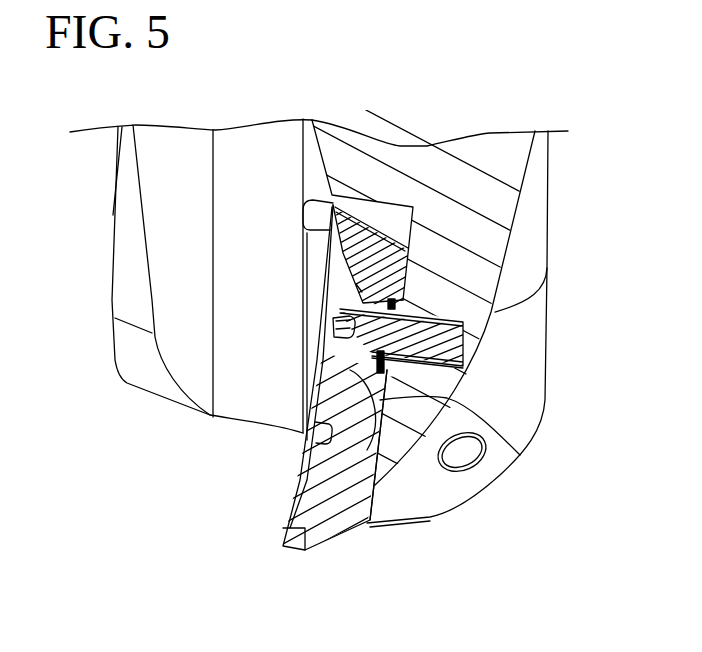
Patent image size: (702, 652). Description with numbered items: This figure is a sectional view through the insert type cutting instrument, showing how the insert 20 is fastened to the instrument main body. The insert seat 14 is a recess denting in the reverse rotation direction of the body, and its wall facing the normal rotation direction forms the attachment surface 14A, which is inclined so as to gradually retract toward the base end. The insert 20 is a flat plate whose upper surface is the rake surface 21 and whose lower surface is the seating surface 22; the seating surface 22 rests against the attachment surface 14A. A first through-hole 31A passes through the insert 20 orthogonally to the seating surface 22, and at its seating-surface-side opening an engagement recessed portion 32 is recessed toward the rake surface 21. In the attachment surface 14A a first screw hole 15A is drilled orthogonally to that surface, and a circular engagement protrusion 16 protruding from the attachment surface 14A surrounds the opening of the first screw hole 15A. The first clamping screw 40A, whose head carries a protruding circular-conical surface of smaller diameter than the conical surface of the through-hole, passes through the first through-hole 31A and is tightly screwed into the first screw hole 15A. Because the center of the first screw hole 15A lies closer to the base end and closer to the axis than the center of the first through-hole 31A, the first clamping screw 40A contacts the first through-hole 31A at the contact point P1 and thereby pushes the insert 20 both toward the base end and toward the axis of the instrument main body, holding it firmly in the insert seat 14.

The insert seat 14 is at (398, 200).
The attachment surface 14A is at (404, 250).
The engagement recessed portion 32 is at (398, 307).
The first clamping screw 40A is at (420, 315).
The contact point P1 is at (360, 290).
The first through-hole 31A is at (333, 335).
The first screw hole 15A is at (468, 356).
The seating surface 22 is at (520, 455).
The rake surface 21 is at (288, 473).
The circular engagement protrusion 16 is at (388, 458).
The insert 20 is at (338, 547).